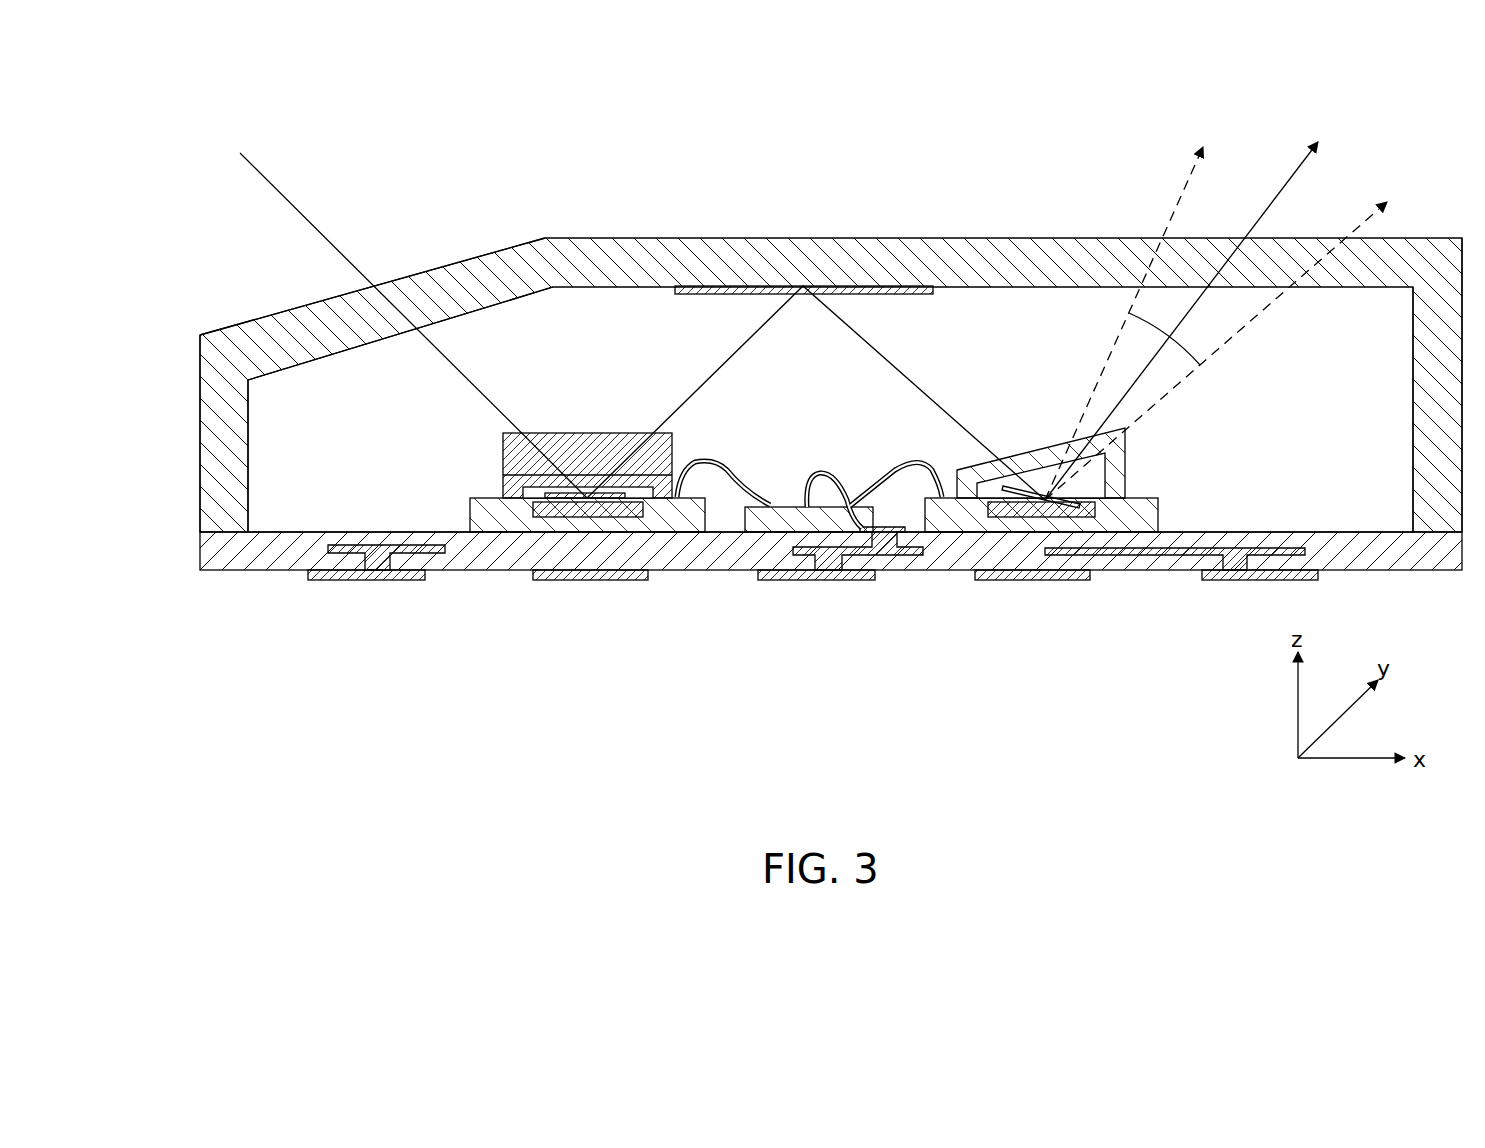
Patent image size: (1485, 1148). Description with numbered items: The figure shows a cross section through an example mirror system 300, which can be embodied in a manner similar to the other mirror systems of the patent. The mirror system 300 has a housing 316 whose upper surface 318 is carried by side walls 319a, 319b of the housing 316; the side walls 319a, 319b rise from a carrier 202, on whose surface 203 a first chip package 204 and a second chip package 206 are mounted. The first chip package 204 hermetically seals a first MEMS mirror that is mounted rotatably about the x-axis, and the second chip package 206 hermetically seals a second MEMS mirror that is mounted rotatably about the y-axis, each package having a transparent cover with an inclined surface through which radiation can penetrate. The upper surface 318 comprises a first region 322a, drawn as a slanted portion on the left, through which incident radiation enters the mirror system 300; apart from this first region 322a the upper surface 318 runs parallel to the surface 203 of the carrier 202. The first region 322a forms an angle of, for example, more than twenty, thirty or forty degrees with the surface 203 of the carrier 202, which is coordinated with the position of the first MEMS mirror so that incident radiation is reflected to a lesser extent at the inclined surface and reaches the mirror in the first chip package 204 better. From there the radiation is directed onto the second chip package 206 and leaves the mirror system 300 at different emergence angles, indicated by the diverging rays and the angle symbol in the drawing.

The mirror system 300 is at (1120, 163).
The upper surface 318 is at (450, 152).
The housing 316 is at (766, 250).
The first region 322a is at (522, 195).
The side wall 319a is at (212, 433).
The side wall 319b is at (1415, 438).
The carrier 202 is at (268, 572).
The surface of the carrier 203 is at (296, 530).
The first chip package 204 is at (588, 418).
The second chip package 206 is at (1015, 420).